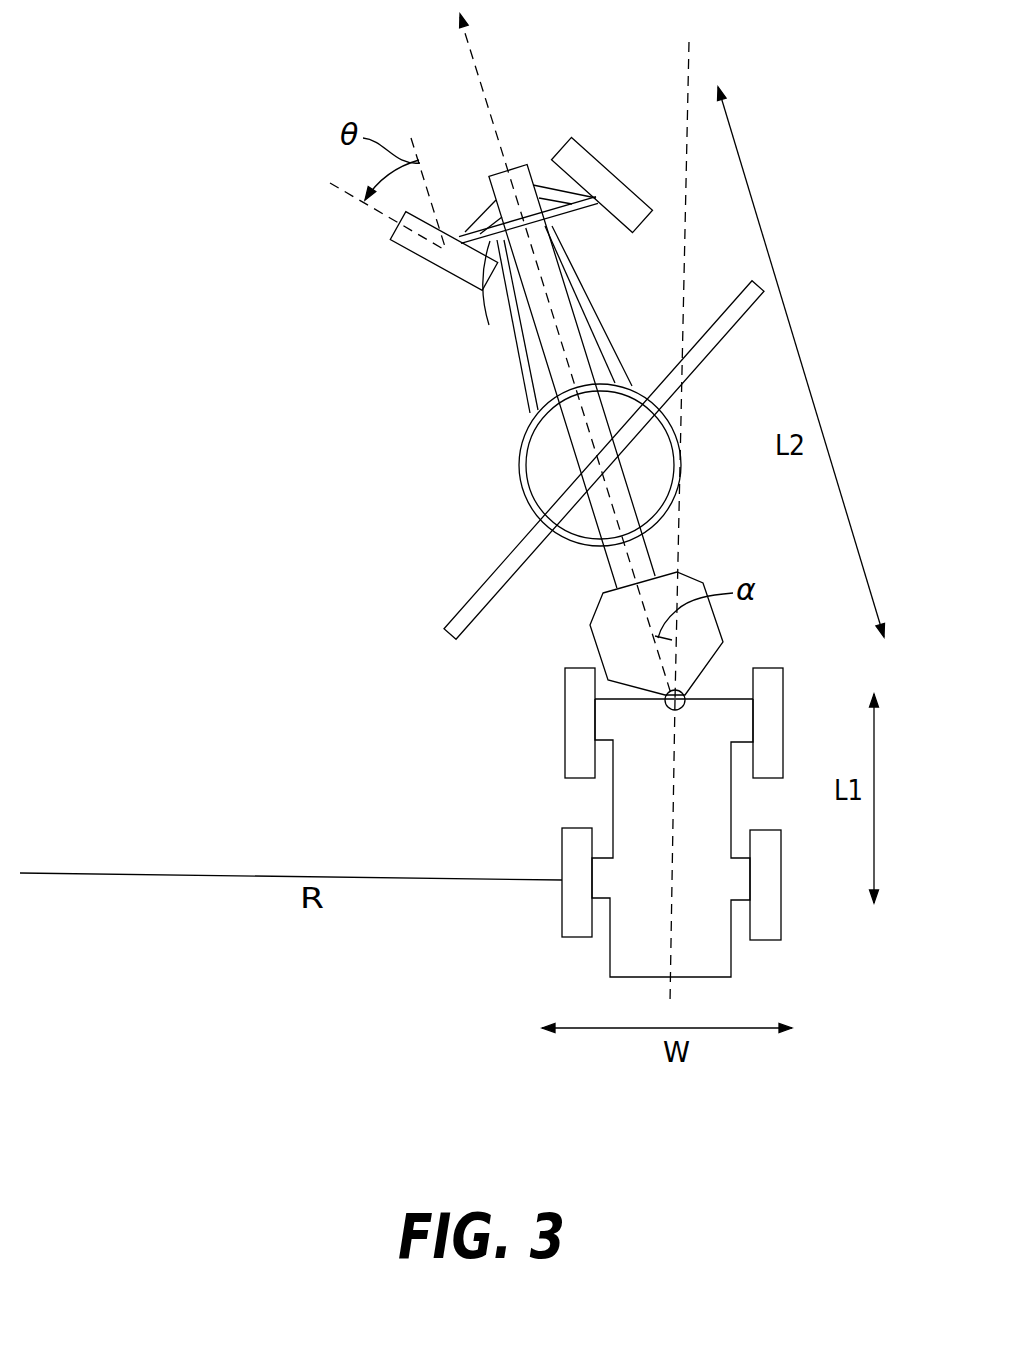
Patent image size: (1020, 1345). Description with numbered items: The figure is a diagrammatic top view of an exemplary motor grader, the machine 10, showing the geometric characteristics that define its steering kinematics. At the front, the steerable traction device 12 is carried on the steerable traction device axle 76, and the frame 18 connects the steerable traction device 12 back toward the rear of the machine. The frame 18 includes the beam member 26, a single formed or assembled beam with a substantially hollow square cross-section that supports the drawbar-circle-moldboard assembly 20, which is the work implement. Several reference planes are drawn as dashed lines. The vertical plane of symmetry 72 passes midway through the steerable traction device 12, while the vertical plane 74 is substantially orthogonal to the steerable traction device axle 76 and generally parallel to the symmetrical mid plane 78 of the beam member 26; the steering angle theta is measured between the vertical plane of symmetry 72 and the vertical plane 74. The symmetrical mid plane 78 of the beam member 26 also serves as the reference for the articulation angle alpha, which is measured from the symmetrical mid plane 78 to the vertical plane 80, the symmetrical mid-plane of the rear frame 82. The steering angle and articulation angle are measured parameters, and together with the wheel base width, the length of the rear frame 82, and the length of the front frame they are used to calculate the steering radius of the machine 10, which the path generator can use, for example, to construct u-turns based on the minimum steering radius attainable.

The machine 10 is at (403, 533).
The steerable traction device 12 is at (571, 136).
The frame 18 is at (470, 385).
The drawbar-circle-moldboard assembly 20 is at (547, 590).
The beam member 26 is at (578, 315).
The vertical plane of symmetry 72 is at (378, 215).
The vertical plane 74 is at (432, 190).
The steerable traction device axle 76 is at (488, 298).
The symmetrical mid plane 78 is at (482, 90).
The vertical plane 80 is at (685, 536).
The rear frame 82 is at (673, 803).